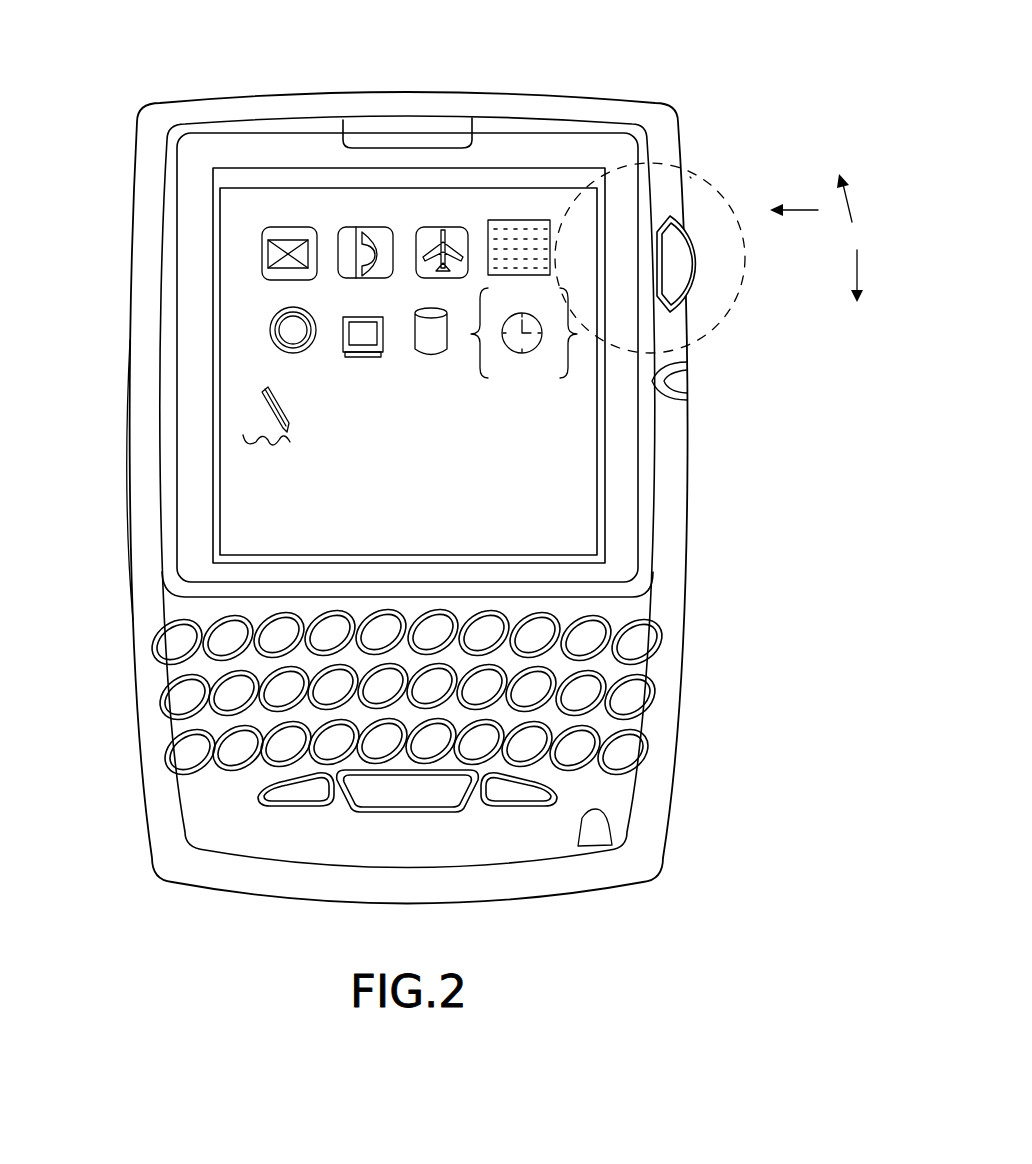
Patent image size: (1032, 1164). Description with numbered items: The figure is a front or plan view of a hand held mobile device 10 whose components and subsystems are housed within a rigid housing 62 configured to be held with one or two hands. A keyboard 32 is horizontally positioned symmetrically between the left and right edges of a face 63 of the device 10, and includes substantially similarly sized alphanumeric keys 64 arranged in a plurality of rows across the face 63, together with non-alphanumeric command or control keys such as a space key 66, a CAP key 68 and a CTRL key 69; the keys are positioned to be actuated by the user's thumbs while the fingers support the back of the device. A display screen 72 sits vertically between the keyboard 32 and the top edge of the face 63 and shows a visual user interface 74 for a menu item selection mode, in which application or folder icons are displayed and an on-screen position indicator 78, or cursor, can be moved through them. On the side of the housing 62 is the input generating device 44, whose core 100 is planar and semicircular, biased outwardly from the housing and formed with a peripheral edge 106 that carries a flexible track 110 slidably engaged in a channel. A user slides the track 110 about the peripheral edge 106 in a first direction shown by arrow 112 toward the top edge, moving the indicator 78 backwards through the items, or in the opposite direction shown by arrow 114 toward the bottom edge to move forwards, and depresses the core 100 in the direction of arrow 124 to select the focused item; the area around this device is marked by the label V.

The mobile device 10 is at (254, 90).
The housing 62 is at (510, 102).
The face 63 is at (176, 603).
The keyboard 32 is at (143, 702).
The display screen 72 is at (238, 256).
The visual user interface 74 is at (243, 316).
The on-screen position indicator 78 is at (478, 378).
The alphanumeric keys 64 is at (640, 697).
The space key 66 is at (378, 800).
The CAP key 68 is at (288, 798).
The CTRL key 69 is at (520, 795).
The core 100 is at (690, 236).
The peripheral edge 106 is at (693, 263).
The flexible track 110 is at (693, 283).
The input generating device 44 is at (696, 304).
The arrow 124 is at (803, 210).
The arrow 112 is at (852, 207).
The arrow 114 is at (857, 270).
The view indicator V is at (690, 177).